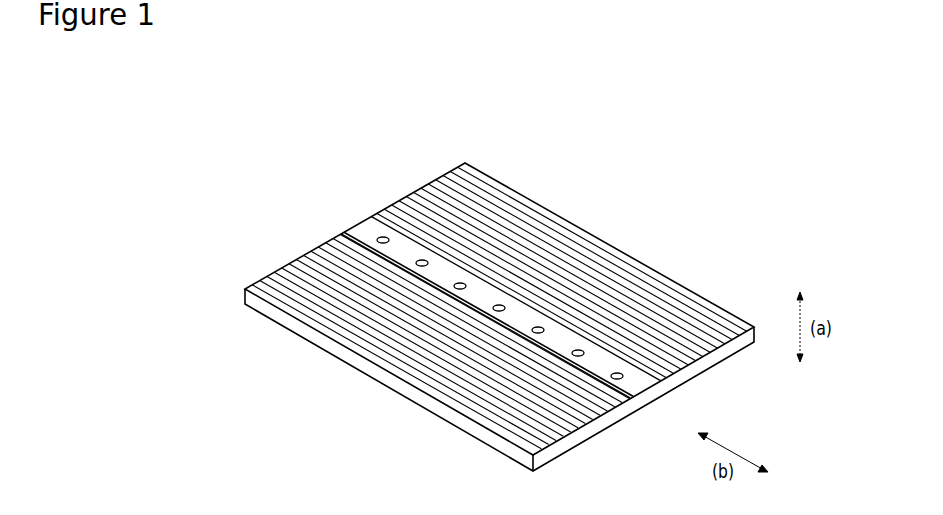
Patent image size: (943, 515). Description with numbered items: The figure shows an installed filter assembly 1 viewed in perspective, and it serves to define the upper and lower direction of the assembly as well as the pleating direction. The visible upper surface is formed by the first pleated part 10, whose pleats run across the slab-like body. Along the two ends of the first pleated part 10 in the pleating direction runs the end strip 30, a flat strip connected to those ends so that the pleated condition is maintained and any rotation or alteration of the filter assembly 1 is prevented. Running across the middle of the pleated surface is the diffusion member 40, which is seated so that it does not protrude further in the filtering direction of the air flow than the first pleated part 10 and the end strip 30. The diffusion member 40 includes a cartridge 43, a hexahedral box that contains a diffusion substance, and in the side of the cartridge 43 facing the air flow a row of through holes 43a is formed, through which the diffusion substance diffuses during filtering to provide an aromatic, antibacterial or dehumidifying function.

The filter assembly 1 is at (508, 94).
The first pleated part 10 is at (690, 290).
The end strip 30 is at (243, 302).
The diffusion member 40 is at (492, 270).
The cartridge 43 is at (492, 270).
The through holes 43a is at (373, 212).